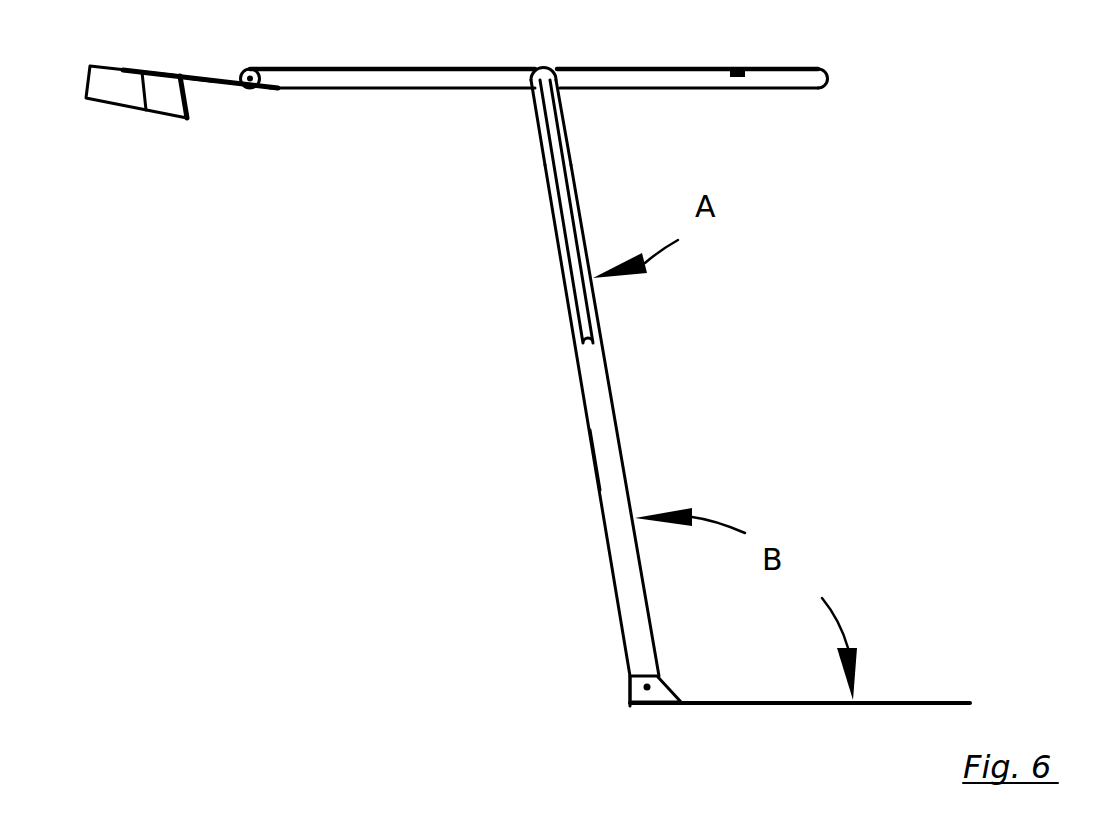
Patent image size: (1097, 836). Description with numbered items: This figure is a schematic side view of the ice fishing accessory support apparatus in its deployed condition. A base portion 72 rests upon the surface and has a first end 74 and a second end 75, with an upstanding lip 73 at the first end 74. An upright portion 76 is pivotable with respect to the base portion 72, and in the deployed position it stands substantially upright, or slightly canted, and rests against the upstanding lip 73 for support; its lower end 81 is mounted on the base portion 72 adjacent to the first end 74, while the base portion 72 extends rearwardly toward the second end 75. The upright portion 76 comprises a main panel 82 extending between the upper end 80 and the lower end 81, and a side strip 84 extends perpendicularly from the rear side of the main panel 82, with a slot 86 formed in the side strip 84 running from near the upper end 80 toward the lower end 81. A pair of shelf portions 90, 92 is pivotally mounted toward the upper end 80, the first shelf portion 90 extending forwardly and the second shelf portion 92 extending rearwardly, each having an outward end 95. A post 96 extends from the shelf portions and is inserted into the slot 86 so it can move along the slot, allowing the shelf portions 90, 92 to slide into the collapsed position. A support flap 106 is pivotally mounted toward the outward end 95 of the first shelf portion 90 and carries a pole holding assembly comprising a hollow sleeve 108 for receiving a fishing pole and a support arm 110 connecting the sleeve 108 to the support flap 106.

The base portion 72 is at (888, 706).
The upstanding lip 73 is at (627, 684).
The first end 74 is at (632, 703).
The second end 75 is at (968, 702).
The upright portion 76 is at (638, 424).
The upper end 80 is at (533, 100).
The lower end 81 is at (626, 674).
The main panel 82 is at (598, 486).
The side strip 84 is at (597, 392).
The slot 86 is at (593, 327).
The first shelf portion 90 is at (362, 92).
The second shelf portion 92 is at (680, 93).
The outward end 95 is at (265, 67).
The post 96 is at (553, 73).
The support flap 106 is at (223, 89).
The sleeve 108 is at (123, 97).
The support arm 110 is at (208, 89).